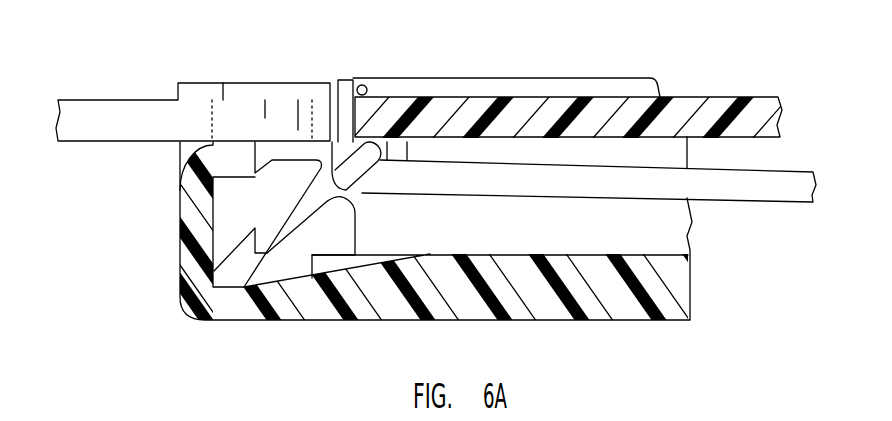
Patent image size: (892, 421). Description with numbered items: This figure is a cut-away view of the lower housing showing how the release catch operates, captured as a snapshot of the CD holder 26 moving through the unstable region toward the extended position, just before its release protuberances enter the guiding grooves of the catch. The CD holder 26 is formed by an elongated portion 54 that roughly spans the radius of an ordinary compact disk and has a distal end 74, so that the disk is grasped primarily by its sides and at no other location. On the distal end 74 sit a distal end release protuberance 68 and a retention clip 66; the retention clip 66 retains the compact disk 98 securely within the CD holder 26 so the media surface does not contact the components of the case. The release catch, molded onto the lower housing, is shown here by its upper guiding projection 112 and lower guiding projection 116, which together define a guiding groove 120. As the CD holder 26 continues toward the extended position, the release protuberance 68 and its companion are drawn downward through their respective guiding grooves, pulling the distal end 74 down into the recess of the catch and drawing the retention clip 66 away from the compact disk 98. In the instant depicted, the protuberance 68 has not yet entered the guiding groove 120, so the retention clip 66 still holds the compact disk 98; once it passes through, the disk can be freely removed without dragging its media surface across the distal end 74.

The CD holder 26 is at (716, 214).
The elongated portion 54 is at (589, 171).
The retention clip 66 is at (364, 87).
The distal end release protuberance 68 is at (357, 168).
The distal end 74 is at (461, 72).
The compact disk 98 is at (709, 97).
The upper guiding projection 112 is at (220, 203).
The lower guiding projection 116 is at (356, 221).
The guiding groove 120 is at (262, 239).